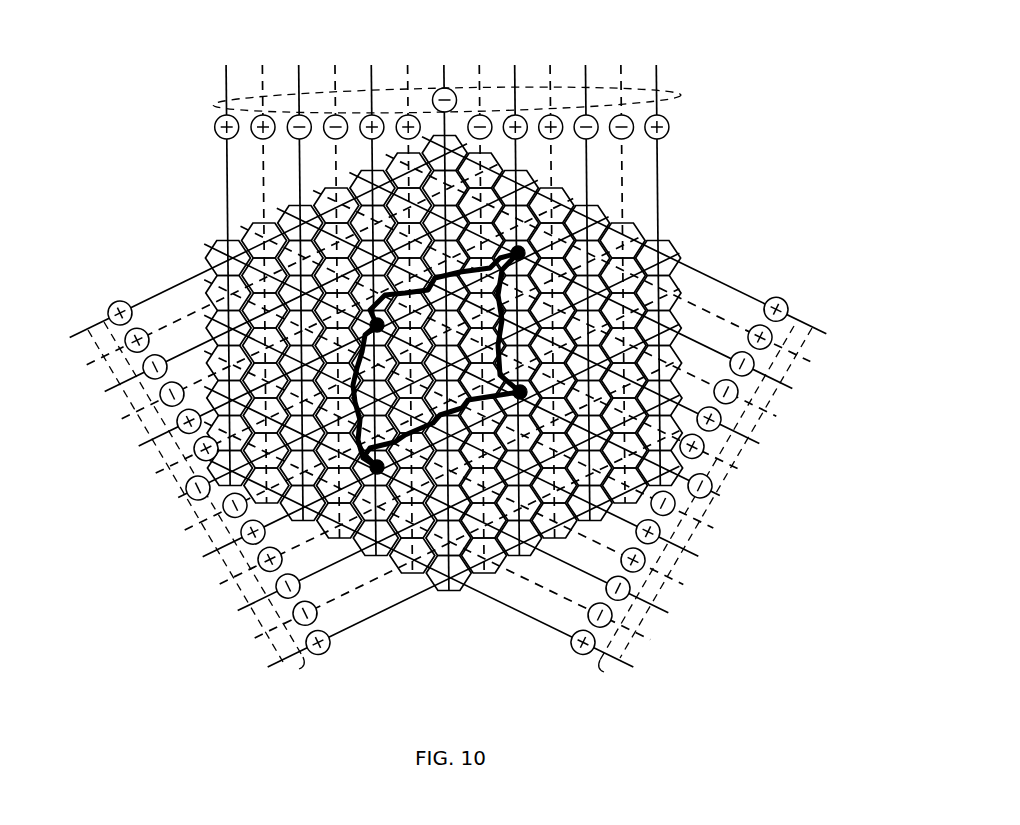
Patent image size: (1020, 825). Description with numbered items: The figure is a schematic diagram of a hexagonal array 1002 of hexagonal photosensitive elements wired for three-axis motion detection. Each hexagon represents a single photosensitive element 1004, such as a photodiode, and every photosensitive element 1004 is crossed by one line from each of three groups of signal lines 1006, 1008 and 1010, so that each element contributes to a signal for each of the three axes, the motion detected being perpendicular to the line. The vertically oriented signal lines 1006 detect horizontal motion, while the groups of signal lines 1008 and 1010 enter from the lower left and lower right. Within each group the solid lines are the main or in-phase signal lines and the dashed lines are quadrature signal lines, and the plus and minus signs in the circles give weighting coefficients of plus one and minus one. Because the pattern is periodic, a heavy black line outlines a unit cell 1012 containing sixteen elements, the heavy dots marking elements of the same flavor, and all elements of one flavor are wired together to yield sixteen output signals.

The hexagonal array 1002 is at (176, 225).
The photosensitive element 1004 is at (458, 104).
The group of signal lines 1006 is at (680, 96).
The group of signal lines 1008 is at (92, 322).
The group of signal lines 1010 is at (818, 312).
The unit cell 1012 is at (440, 360).